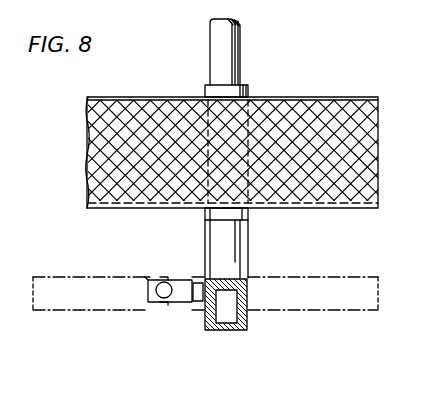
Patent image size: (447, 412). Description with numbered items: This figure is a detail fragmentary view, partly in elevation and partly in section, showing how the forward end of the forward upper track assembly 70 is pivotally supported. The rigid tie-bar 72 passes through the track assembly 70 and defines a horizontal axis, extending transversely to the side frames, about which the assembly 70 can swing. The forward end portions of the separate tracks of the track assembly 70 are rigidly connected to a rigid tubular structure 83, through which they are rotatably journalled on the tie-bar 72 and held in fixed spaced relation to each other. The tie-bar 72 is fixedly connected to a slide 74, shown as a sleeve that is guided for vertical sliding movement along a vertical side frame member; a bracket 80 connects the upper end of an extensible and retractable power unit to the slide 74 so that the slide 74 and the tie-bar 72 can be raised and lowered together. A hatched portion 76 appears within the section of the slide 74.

The forward upper track assembly 70 is at (337, 108).
The tie-bar 72 is at (233, 38).
The slide 74 is at (205, 325).
The wall of cap 76 is at (238, 312).
The bracket 80 is at (172, 277).
The tubular structure 83 is at (205, 90).